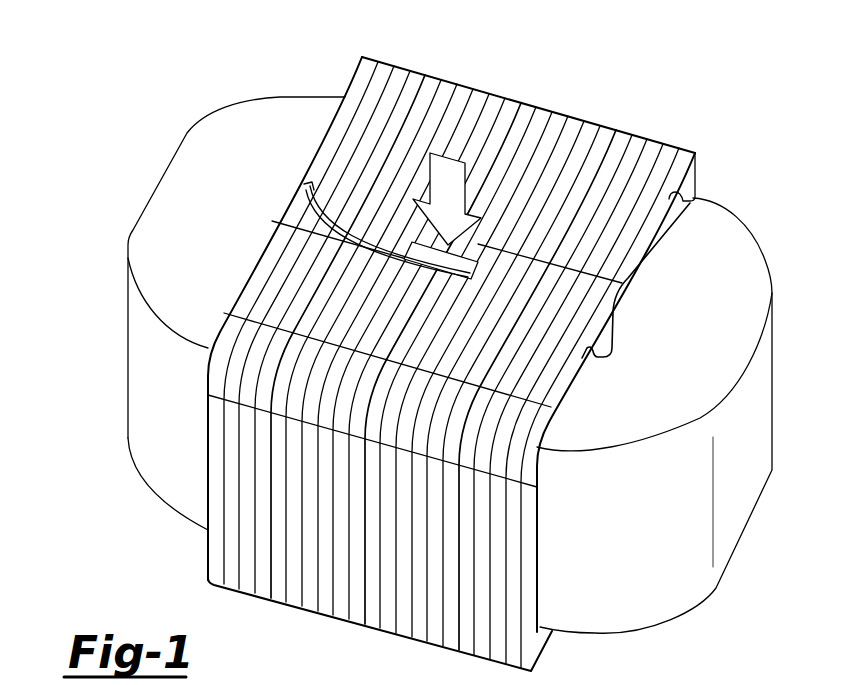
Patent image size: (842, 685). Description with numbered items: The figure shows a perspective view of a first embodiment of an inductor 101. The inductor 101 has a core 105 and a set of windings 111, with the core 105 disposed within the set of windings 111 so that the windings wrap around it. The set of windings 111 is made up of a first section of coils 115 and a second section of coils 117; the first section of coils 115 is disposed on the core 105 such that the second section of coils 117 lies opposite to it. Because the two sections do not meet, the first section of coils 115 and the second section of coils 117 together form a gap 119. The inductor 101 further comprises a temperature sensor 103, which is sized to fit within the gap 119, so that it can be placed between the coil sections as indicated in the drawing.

The inductor 101 is at (397, 344).
The temperature sensor 103 is at (396, 232).
The core 105 is at (154, 388).
The set of windings 111 is at (379, 355).
The first section of coils 115 is at (547, 132).
The second section of coils 117 is at (240, 484).
The gap 119 is at (648, 298).